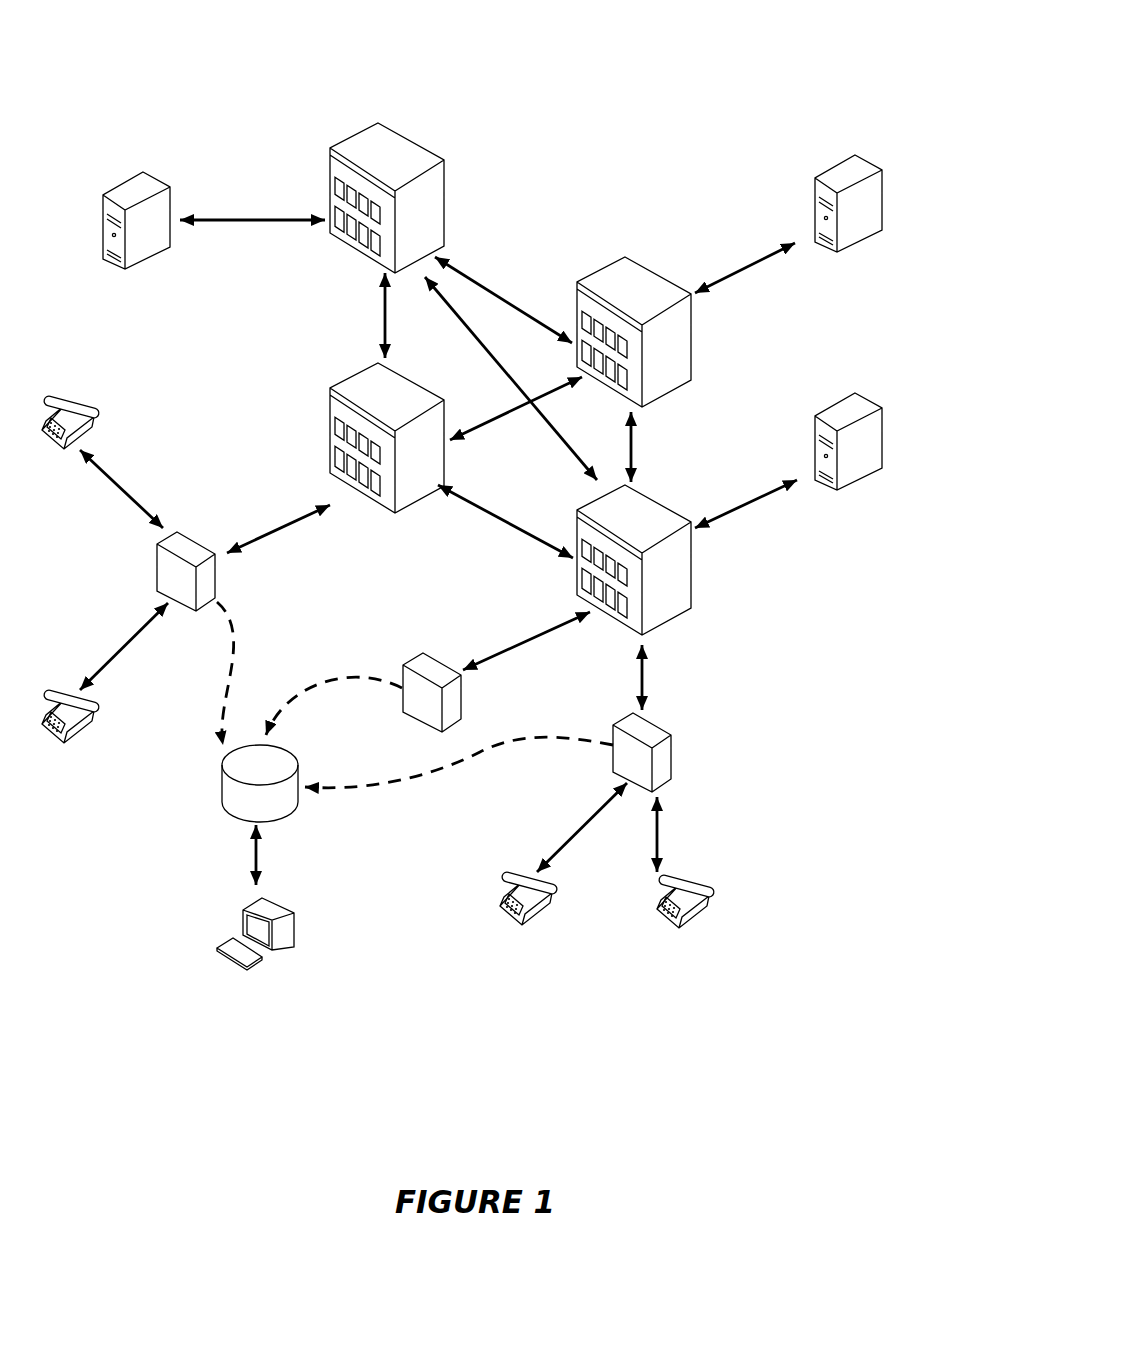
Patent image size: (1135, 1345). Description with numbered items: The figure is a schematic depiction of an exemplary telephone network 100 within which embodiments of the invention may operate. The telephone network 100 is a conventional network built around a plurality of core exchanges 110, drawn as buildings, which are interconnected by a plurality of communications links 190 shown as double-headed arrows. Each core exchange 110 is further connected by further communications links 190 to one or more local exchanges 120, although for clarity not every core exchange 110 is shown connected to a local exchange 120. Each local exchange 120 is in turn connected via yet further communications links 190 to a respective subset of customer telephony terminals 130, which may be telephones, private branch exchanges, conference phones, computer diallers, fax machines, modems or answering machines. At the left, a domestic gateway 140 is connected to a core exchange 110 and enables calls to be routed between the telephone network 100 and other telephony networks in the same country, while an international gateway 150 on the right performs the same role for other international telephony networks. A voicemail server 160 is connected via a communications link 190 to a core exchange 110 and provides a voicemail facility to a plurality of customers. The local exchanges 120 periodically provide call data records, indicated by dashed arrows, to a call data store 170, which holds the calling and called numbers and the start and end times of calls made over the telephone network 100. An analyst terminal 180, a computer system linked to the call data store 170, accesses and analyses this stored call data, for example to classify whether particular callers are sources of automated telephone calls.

The telephone network 100 is at (716, 66).
The core exchange 110 is at (450, 193).
The local exchange 120 is at (155, 570).
The customer telephony terminal 130 is at (100, 432).
The domestic gateway 140 is at (126, 268).
The international gateway 150 is at (887, 196).
The voicemail server 160 is at (850, 497).
The call data store 170 is at (232, 816).
The analyst terminal 180 is at (275, 952).
The communications link 190 is at (250, 213).